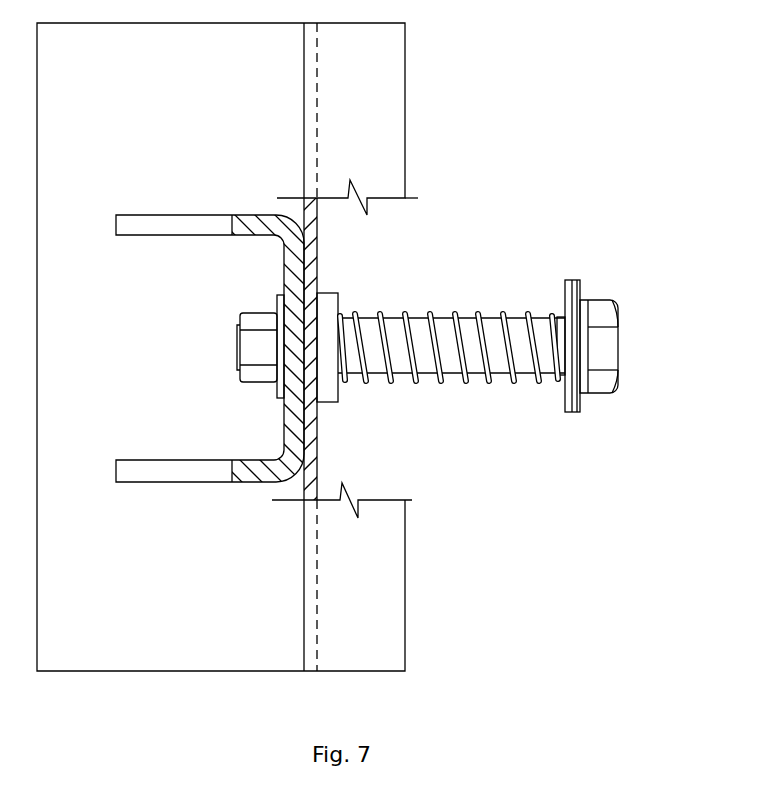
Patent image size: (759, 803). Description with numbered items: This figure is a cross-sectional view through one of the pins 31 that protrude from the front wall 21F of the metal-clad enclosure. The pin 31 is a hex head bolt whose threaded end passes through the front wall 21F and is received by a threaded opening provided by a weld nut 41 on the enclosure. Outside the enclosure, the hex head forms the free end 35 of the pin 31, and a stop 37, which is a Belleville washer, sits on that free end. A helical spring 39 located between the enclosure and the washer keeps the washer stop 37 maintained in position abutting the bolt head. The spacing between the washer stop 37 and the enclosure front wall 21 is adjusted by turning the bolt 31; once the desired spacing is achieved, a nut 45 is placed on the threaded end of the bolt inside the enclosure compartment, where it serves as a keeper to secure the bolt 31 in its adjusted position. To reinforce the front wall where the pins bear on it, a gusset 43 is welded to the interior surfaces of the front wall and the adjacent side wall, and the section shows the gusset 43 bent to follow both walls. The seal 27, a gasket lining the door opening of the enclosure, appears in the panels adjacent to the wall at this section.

The enclosure front wall 21 is at (158, 572).
The front wall 21F is at (322, 459).
The seal 27 is at (377, 103).
The pin 31 is at (470, 332).
The free end 35 is at (602, 349).
The stop 37 is at (588, 270).
The helical spring 39 is at (494, 392).
The weld nut 41 is at (330, 288).
The gusset 43 is at (170, 205).
The nut 45 is at (258, 347).